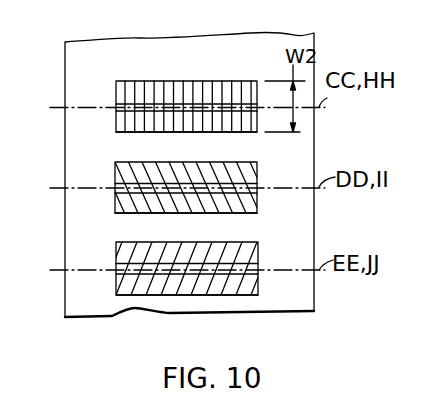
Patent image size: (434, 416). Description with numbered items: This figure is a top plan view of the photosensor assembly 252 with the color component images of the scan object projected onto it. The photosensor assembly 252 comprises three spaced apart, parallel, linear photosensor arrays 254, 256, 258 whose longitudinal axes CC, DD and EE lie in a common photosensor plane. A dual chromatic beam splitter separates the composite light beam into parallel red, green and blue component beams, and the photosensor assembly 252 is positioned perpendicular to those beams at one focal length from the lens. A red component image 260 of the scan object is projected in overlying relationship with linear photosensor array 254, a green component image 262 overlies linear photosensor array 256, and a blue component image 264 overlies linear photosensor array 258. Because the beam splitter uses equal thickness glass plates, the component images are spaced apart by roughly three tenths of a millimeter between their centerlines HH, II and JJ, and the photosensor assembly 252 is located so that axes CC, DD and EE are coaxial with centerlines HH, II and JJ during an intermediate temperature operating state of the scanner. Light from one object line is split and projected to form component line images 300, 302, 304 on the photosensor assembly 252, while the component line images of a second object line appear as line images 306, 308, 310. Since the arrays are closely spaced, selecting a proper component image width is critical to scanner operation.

The photosensor assembly 252 is at (315, 56).
The linear photosensor array 254 is at (116, 100).
The linear photosensor array 256 is at (116, 193).
The linear photosensor array 258 is at (117, 270).
The red component image 260 is at (240, 86).
The green component image 262 is at (250, 165).
The blue component image 264 is at (247, 250).
The component line image 300 is at (160, 80).
The component line image 302 is at (157, 163).
The component line image 304 is at (157, 243).
The line image 306 is at (128, 133).
The line image 308 is at (123, 214).
The line image 310 is at (137, 293).